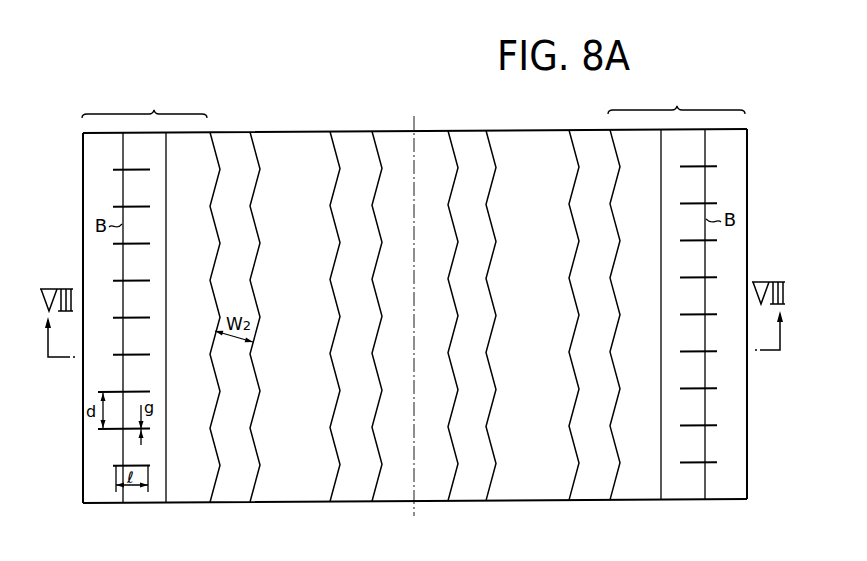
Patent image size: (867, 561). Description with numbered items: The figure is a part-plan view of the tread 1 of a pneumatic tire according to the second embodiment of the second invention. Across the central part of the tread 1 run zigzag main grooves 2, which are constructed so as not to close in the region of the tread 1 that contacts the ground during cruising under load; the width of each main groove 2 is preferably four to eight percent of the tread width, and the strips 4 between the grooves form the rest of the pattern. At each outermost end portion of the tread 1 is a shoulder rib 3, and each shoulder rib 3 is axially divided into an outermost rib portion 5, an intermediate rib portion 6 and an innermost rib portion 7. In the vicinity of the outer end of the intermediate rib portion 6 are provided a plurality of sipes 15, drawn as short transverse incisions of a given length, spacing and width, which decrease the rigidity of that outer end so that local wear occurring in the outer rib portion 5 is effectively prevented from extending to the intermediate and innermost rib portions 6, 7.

The tread 1 is at (447, 88).
The main groove 2 is at (234, 131).
The shoulder rib 3 is at (413, 99).
The gap between heating strips 4 is at (295, 131).
The outermost rib portion 5 is at (110, 165).
The intermediate rib portion 6 is at (133, 165).
The innermost rib portion 7 is at (176, 165).
The sipes 15 is at (118, 316).